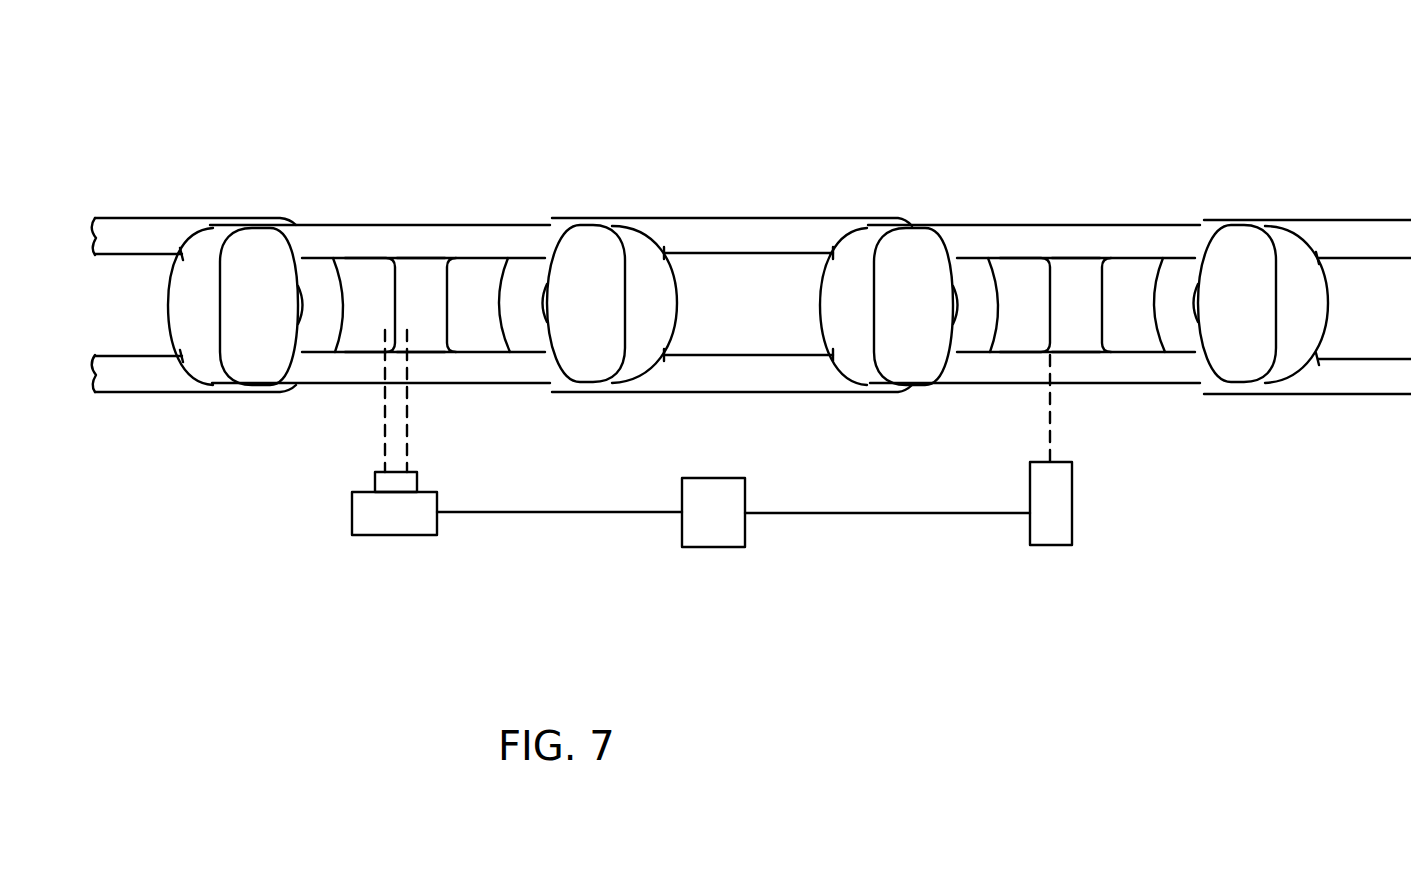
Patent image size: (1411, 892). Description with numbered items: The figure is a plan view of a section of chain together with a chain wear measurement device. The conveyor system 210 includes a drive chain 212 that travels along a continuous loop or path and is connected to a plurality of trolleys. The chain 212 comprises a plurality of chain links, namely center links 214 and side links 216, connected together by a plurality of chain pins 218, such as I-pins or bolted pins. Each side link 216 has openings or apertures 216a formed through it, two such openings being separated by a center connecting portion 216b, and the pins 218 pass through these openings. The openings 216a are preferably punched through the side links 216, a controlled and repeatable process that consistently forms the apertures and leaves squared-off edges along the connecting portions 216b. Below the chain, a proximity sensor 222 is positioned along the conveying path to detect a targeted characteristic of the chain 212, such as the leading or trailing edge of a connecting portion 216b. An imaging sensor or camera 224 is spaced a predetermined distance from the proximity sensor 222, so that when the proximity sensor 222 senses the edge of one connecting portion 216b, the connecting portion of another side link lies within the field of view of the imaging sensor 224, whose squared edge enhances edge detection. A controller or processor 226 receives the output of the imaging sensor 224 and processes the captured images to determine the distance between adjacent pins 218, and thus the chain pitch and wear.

The conveyor system 210 is at (460, 94).
The drive chain 212 is at (817, 163).
The center link 214 is at (140, 382).
The side link 216 is at (1150, 232).
The opening or aperture 216a is at (362, 280).
The center connecting portion 216b is at (427, 278).
The chain pin 218 is at (265, 257).
The proximity sensor 222 is at (1065, 533).
The imaging sensor 224 is at (390, 527).
The controller 226 is at (713, 537).